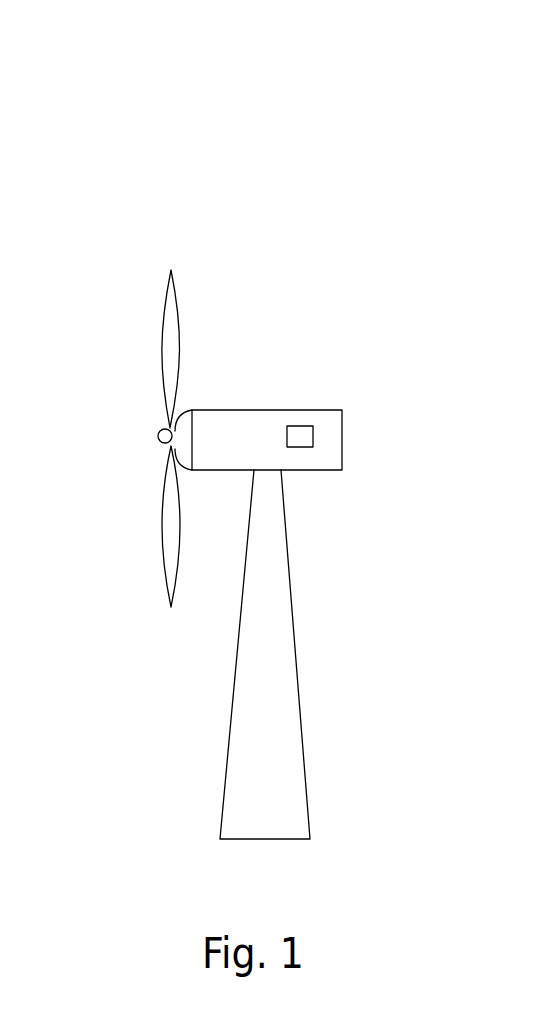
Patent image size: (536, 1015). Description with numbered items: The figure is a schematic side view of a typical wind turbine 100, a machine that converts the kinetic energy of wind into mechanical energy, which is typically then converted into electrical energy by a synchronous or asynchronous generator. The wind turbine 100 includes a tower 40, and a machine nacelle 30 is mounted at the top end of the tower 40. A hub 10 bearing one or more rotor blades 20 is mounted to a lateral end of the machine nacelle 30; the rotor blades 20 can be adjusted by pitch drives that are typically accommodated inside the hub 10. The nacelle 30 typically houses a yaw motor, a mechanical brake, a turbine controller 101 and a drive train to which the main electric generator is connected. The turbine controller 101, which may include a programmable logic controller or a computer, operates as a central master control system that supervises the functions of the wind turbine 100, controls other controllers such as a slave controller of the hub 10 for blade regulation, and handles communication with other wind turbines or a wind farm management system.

The wind turbine 100 is at (287, 52).
The hub 10 is at (158, 435).
The rotor blades 20 is at (160, 332).
The machine nacelle 30 is at (268, 407).
The turbine controller 101 is at (313, 426).
The tower 40 is at (225, 748).